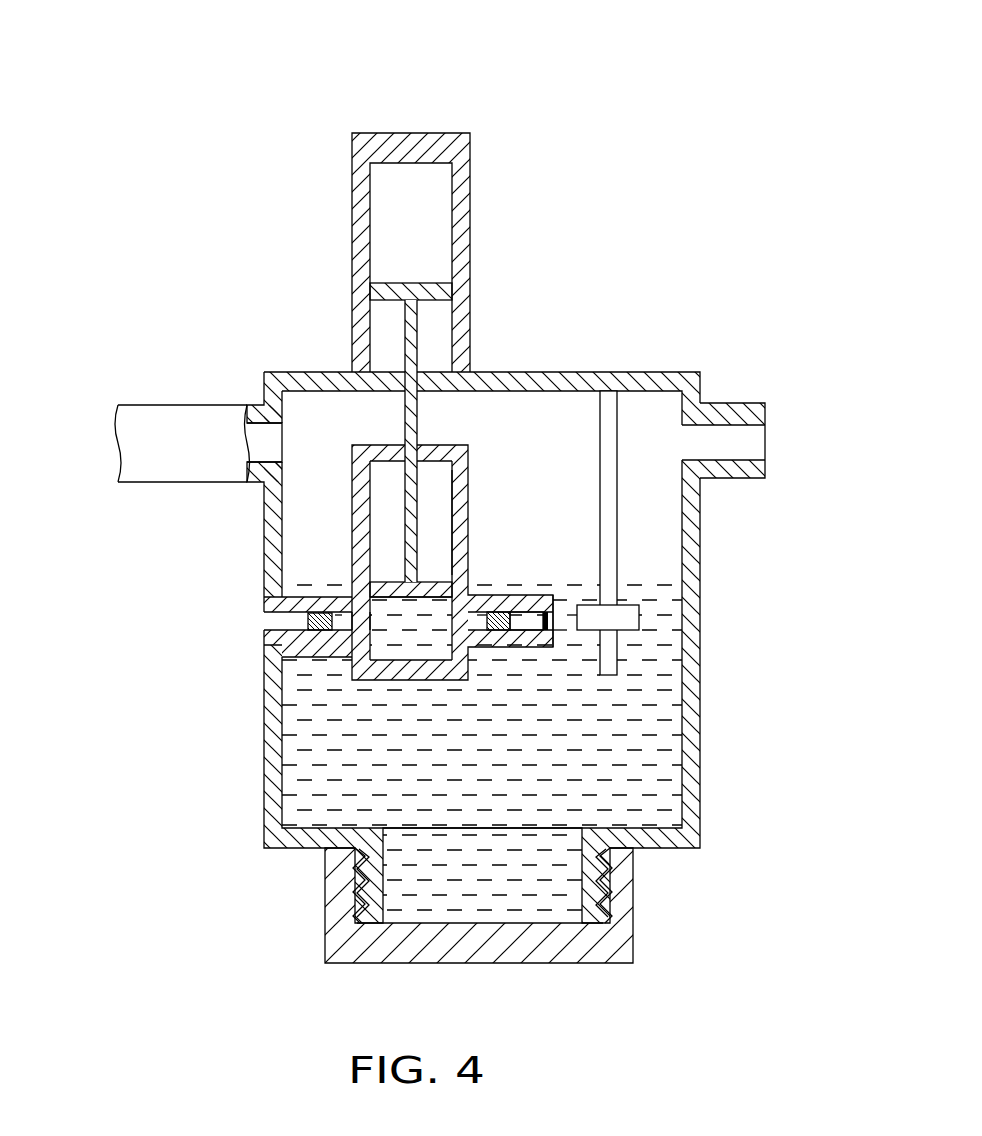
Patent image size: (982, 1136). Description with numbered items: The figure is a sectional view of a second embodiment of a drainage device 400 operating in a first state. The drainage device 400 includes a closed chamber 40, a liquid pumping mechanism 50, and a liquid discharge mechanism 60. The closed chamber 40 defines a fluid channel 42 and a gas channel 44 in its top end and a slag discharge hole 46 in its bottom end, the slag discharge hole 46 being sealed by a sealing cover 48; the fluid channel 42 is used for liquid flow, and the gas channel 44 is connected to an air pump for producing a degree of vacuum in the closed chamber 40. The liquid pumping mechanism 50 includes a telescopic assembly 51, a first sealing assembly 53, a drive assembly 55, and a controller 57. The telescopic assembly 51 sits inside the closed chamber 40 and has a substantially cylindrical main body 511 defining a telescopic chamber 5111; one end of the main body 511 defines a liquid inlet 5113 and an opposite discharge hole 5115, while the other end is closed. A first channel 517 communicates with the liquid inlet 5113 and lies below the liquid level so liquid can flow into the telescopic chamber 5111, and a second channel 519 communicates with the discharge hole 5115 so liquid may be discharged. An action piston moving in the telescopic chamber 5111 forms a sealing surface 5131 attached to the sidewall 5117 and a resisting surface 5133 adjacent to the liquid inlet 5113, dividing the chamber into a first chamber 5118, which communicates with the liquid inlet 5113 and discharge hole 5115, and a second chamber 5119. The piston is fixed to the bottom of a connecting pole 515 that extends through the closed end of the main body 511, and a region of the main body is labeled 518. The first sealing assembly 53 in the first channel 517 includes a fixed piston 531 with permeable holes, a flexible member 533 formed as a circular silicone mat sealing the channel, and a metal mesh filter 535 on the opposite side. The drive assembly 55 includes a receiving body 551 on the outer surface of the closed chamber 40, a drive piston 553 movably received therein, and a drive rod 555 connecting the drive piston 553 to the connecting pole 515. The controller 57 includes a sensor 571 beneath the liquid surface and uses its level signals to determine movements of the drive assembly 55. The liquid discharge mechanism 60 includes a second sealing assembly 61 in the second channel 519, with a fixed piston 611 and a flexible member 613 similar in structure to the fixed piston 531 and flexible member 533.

The drainage device 400 is at (286, 35).
The closed chamber 40 is at (655, 372).
The fluid channel 42 is at (160, 422).
The gas channel 44 is at (728, 440).
The slag discharge hole 46 is at (438, 829).
The sealing cover 48 is at (387, 950).
The liquid pumping mechanism 50 is at (496, 674).
The telescopic assembly 51 is at (452, 432).
The main body 511 is at (462, 468).
The telescopic chamber 5111 is at (383, 483).
The liquid inlet 5113 is at (410, 668).
The discharge hole 5115 is at (395, 597).
The sidewall 5117 is at (450, 523).
The first chamber 5118 is at (470, 585).
The second chamber 5119 is at (435, 512).
The sealing surface 5131 is at (440, 588).
The resisting surface 5133 is at (465, 580).
The connecting pole 515 is at (410, 562).
The first channel 517 is at (532, 612).
The cylinder wall flange 518 is at (470, 550).
The second channel 519 is at (273, 623).
The first sealing assembly 53 is at (763, 640).
The fixed piston 531 is at (498, 630).
The flexible member 533 is at (527, 632).
The filter 535 is at (478, 620).
The drive assembly 55 is at (346, 167).
The receiving body 551 is at (363, 204).
The drive piston 553 is at (386, 291).
The drive rod 555 is at (413, 348).
The controller 57 is at (632, 547).
The sensor 571 is at (635, 617).
The liquid discharge mechanism 60 is at (305, 655).
The second sealing assembly 61 is at (188, 618).
The fixed piston 611 is at (367, 618).
The flexible member 613 is at (307, 627).